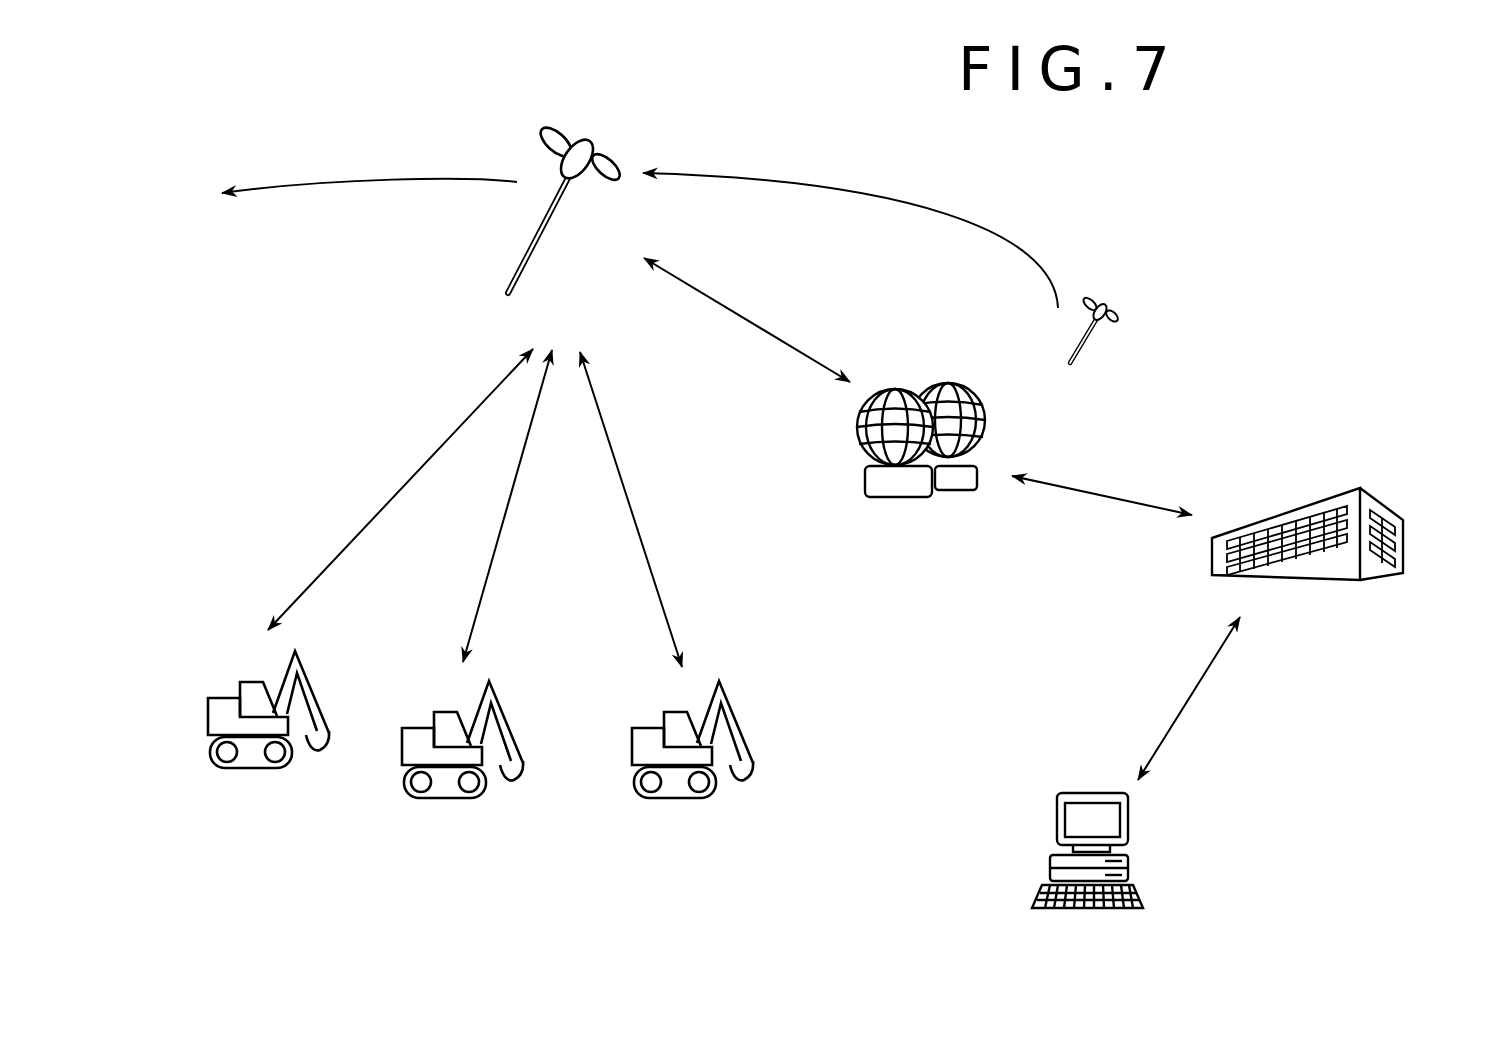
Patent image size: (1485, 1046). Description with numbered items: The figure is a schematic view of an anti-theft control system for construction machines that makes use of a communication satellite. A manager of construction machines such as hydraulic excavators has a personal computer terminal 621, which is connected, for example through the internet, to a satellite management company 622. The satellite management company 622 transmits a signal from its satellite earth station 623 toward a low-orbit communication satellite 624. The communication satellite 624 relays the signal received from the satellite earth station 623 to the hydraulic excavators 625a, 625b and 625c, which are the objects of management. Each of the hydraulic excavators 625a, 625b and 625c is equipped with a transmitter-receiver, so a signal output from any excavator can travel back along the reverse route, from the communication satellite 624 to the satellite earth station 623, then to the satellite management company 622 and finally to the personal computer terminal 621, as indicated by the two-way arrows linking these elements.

The personal computer terminal 621 is at (1128, 823).
The satellite management company 622 is at (1405, 515).
The satellite earth station 623 is at (983, 405).
The communication satellite 624 is at (605, 152).
The hydraulic excavator 625a is at (252, 692).
The hydraulic excavator 625b is at (442, 717).
The hydraulic excavator 625c is at (672, 718).